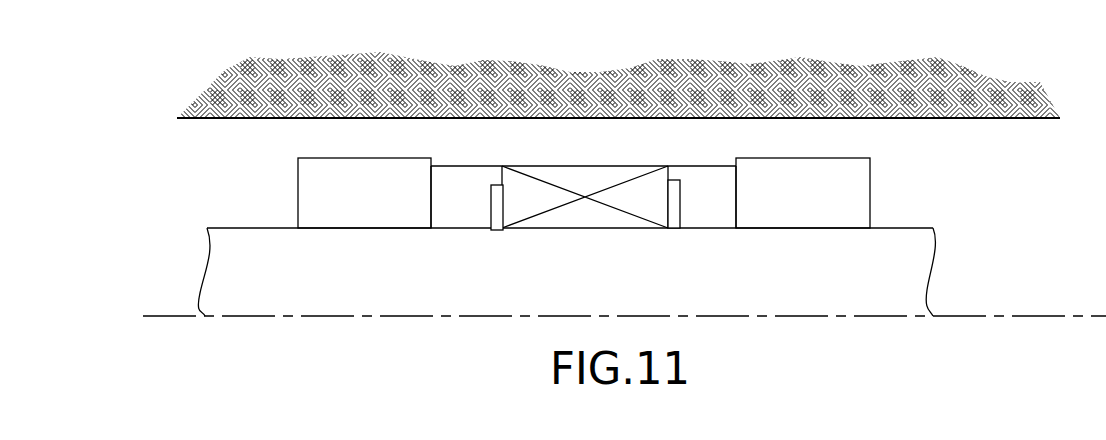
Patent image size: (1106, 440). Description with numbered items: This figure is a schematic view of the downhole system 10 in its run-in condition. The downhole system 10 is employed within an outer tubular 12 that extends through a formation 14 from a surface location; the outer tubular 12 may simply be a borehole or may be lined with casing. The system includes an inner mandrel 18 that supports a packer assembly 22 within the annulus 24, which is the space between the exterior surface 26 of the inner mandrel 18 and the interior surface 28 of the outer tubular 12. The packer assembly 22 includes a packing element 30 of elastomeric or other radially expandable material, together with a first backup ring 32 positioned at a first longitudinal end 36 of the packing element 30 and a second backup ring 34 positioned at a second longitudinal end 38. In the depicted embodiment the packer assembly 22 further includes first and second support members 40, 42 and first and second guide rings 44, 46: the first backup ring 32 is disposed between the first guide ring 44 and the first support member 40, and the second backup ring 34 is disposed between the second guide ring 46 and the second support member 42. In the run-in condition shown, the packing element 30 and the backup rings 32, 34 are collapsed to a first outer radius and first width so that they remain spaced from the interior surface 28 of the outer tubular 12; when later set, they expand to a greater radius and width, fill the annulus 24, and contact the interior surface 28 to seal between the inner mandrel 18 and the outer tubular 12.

The downhole system 10 is at (262, 161).
The outer tubular 12 is at (302, 117).
The formation 14 is at (817, 96).
The inner mandrel 18 is at (885, 268).
The packer assembly 22 is at (583, 134).
The annulus 24 is at (428, 153).
The exterior surface 26 is at (897, 228).
The interior surface 28 is at (972, 118).
The packing element 30 is at (610, 178).
The first backup ring 32 is at (468, 178).
The second backup ring 34 is at (715, 178).
The first longitudinal end 36 is at (513, 200).
The second longitudinal end 38 is at (668, 178).
The first support member 40 is at (362, 200).
The second support member 42 is at (803, 183).
The first guide ring 44 is at (502, 232).
The second guide ring 46 is at (680, 202).